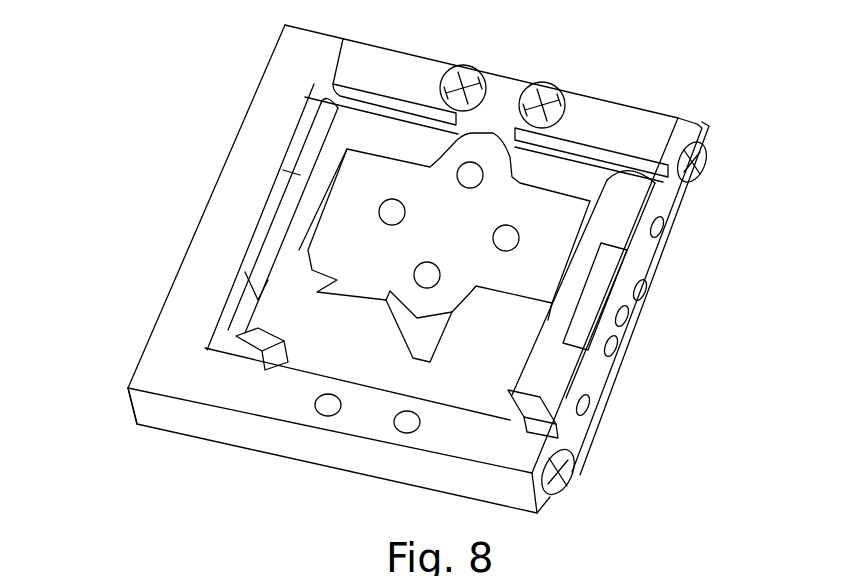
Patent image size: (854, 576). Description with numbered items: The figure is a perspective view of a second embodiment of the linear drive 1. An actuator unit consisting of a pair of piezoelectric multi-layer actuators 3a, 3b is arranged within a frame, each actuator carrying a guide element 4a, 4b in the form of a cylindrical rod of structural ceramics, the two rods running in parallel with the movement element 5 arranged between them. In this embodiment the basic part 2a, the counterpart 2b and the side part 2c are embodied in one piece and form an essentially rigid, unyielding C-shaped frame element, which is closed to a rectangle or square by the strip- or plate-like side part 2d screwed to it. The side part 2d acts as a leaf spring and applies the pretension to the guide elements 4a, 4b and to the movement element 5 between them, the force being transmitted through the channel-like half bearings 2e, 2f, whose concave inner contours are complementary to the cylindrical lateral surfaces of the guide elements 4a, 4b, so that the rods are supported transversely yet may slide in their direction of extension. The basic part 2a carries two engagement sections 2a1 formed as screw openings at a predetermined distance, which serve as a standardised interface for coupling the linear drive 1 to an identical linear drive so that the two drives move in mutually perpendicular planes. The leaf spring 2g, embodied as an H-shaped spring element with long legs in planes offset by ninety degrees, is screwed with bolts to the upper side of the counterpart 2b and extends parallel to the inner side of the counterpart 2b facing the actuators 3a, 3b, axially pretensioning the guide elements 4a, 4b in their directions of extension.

The linear drive 1 is at (118, 283).
The basic part 2a is at (197, 372).
The engagement sections 2a1 is at (327, 405).
The counterpart 2b is at (330, 52).
The side part 2c is at (218, 248).
The side part 2d is at (648, 262).
The half bearing 2e is at (293, 183).
The half bearing 2f is at (595, 303).
The leaf spring 2g is at (593, 118).
The piezoelectric multi-layer actuator 3a is at (253, 348).
The piezoelectric multi-layer actuator 3b is at (527, 403).
The guide element 4a is at (295, 240).
The guide element 4b is at (637, 207).
The movement element 5 is at (558, 232).